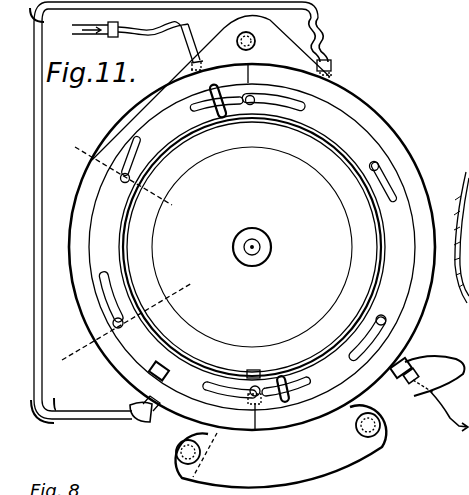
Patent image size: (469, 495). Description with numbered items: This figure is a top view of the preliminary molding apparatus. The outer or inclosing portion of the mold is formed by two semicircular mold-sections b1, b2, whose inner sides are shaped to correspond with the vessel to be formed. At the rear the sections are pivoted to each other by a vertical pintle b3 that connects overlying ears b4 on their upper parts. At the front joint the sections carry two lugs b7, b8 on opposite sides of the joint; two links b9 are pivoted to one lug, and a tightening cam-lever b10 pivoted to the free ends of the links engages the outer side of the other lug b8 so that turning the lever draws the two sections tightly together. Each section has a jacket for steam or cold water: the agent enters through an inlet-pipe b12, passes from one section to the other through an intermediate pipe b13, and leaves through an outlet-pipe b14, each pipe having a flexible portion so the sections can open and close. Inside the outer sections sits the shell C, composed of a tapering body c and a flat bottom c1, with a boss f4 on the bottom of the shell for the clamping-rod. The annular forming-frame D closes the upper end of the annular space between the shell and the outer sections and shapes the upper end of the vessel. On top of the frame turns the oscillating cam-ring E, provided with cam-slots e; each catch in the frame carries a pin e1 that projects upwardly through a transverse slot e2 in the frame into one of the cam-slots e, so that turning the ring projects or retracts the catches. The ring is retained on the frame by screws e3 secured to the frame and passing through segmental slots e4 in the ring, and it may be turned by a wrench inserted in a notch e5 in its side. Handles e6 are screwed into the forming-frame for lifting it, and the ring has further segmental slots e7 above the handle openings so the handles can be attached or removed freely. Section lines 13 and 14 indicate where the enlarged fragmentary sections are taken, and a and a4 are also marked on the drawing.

The intermediate pipe b13 is at (36, 180).
The inlet-pipe b12 is at (78, 29).
The overlying ears b4 is at (262, 46).
The vertical pintle b3 is at (240, 42).
The semicircular mold-section b2 is at (252, 247).
The semicircular mold-section b1 is at (71, 246).
The annular forming-frame D is at (119, 247).
The oscillating cam-ring E is at (378, 262).
The shell C is at (256, 247).
The tapering body c is at (312, 155).
The flat bottom c1 is at (268, 188).
The boss f4 is at (271, 249).
The segmental slots e7 is at (209, 106).
The handles e6 is at (220, 118).
The segmental slots e4 is at (107, 278).
The screws e3 is at (120, 328).
The notch e5 is at (152, 372).
The cam-slots e is at (139, 141).
The transverse slot e2 is at (124, 173).
The pin e1 is at (373, 162).
The ring edge a4 is at (144, 185).
The shell a is at (460, 129).
The section line 13 13 is at (120, 178).
The section line 14 14 is at (129, 323).
The lug b7 is at (160, 418).
The links b9 is at (281, 445).
The lug b8 is at (326, 421).
The tightening cam-lever b10 is at (397, 422).
The outlet-pipe b14 is at (415, 367).